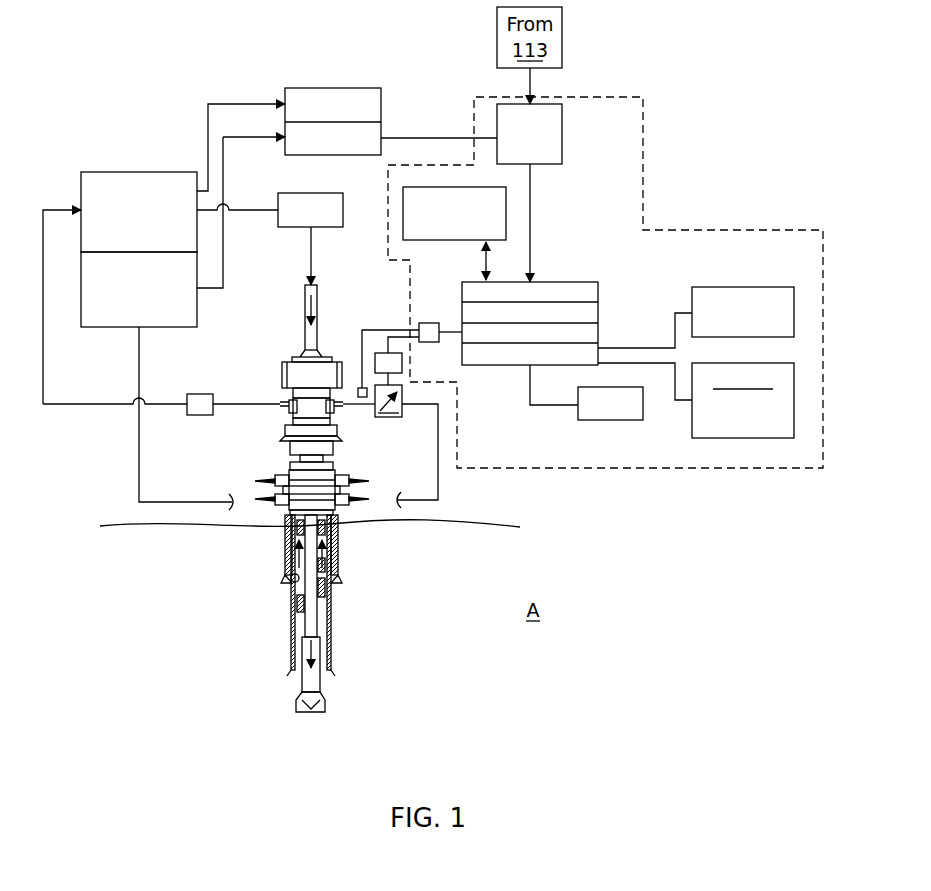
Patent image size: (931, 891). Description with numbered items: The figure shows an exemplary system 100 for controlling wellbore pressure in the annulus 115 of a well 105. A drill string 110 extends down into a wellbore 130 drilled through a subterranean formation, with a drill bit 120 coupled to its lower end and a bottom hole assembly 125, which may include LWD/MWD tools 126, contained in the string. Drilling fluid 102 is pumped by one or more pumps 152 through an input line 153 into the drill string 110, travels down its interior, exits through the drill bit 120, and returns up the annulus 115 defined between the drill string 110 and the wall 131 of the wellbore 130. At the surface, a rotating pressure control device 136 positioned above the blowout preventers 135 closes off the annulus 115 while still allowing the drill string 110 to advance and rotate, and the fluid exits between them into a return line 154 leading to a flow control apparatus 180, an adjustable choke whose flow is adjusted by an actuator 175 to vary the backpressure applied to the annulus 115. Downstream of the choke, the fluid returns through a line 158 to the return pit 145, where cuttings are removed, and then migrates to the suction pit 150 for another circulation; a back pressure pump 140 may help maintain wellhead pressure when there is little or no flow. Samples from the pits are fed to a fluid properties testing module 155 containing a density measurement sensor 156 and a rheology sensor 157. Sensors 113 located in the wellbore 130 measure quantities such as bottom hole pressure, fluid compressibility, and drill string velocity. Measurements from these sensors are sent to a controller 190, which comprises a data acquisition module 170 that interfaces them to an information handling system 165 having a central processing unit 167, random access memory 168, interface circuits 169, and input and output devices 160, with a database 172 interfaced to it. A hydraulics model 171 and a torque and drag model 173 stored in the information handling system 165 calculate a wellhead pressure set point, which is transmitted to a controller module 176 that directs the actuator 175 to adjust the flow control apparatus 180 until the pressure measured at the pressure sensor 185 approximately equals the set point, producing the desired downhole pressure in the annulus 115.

The system 100 is at (122, 72).
The drilling fluid 102 is at (318, 312).
The well 105 is at (427, 555).
The drill string 110 is at (305, 300).
The sensors 113 is at (287, 530).
The annulus 115 is at (320, 644).
The drill bit 120 is at (325, 703).
The bottom hole assembly 125 is at (275, 672).
The LWD/MWD tools 126 is at (300, 697).
The wellbore 130 is at (295, 682).
The wall of the wellbore 131 is at (295, 585).
The blowout preventers 135 is at (275, 490).
The rotating pressure control device 136 is at (282, 377).
The back pressure pump 140 is at (197, 415).
The return pit 145 is at (197, 321).
The suction pit 150 is at (133, 171).
The pumps 152 is at (300, 193).
The input line 153 is at (313, 259).
The return line 154 is at (346, 407).
The fluid properties testing module 155 is at (378, 60).
The density measurement sensor 156 is at (381, 95).
The rheology sensor 157 is at (381, 128).
The line 158 is at (139, 452).
The input and output devices 160 is at (465, 240).
The information handling system 165 is at (563, 272).
The central processing unit 167 is at (598, 292).
The random access memory 168 is at (598, 313).
The interface circuits 169 is at (598, 333).
The data acquisition module 170 is at (517, 145).
The hydraulics model 171 is at (758, 438).
The database 172 is at (752, 287).
The torque and drag model 173 is at (597, 415).
The actuator 175 is at (402, 362).
The controller module 176 is at (430, 323).
The flow control apparatus 180 is at (392, 417).
The pressure sensor 185 is at (360, 387).
The controller 190 is at (735, 230).